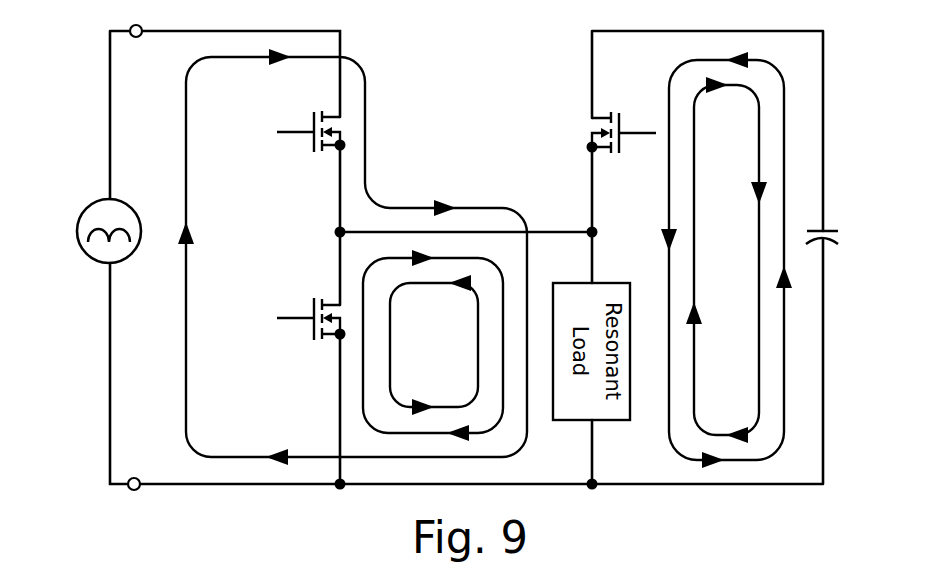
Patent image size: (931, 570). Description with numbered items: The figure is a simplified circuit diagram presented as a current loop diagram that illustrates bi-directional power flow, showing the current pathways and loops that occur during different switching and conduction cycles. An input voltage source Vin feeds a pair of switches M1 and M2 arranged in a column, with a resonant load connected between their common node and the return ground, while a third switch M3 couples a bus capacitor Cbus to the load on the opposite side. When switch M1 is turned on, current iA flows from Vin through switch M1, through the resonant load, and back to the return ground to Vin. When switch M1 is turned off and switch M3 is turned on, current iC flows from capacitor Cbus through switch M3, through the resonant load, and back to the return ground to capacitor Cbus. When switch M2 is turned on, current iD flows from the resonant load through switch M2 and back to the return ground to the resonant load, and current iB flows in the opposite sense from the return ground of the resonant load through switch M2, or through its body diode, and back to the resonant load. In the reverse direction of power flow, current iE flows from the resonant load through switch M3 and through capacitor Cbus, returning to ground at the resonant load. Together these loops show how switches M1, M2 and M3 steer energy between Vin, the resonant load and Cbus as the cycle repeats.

The input voltage source Vin is at (84, 231).
The switch M1 is at (304, 128).
The switch M2 is at (304, 316).
The switch M3 is at (627, 130).
The bus capacitor Cbus is at (856, 232).
The current iA is at (352, 257).
The current iB is at (433, 338).
The current iC is at (712, 260).
The current iD is at (434, 345).
The current iE is at (726, 260).